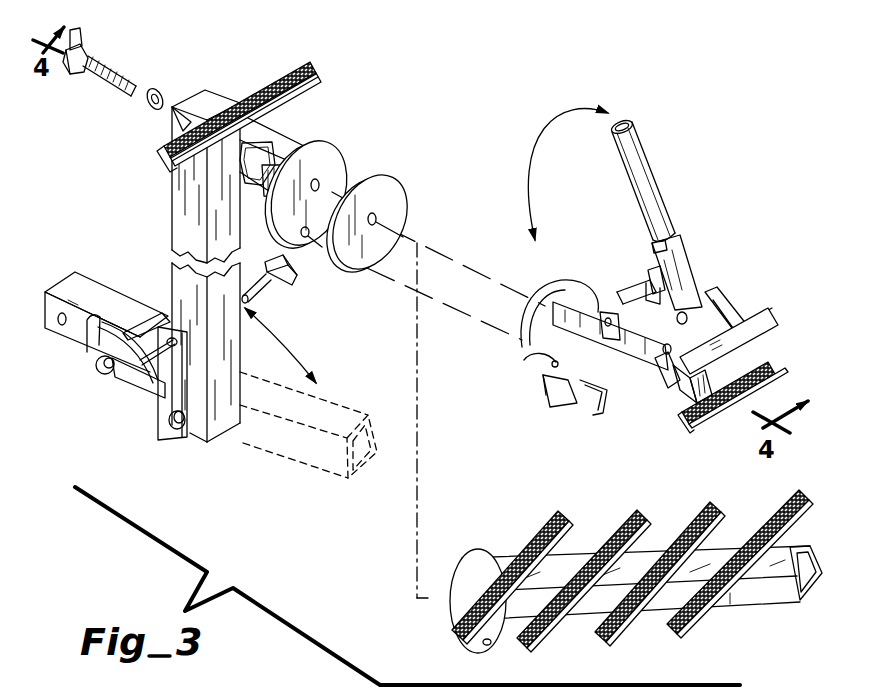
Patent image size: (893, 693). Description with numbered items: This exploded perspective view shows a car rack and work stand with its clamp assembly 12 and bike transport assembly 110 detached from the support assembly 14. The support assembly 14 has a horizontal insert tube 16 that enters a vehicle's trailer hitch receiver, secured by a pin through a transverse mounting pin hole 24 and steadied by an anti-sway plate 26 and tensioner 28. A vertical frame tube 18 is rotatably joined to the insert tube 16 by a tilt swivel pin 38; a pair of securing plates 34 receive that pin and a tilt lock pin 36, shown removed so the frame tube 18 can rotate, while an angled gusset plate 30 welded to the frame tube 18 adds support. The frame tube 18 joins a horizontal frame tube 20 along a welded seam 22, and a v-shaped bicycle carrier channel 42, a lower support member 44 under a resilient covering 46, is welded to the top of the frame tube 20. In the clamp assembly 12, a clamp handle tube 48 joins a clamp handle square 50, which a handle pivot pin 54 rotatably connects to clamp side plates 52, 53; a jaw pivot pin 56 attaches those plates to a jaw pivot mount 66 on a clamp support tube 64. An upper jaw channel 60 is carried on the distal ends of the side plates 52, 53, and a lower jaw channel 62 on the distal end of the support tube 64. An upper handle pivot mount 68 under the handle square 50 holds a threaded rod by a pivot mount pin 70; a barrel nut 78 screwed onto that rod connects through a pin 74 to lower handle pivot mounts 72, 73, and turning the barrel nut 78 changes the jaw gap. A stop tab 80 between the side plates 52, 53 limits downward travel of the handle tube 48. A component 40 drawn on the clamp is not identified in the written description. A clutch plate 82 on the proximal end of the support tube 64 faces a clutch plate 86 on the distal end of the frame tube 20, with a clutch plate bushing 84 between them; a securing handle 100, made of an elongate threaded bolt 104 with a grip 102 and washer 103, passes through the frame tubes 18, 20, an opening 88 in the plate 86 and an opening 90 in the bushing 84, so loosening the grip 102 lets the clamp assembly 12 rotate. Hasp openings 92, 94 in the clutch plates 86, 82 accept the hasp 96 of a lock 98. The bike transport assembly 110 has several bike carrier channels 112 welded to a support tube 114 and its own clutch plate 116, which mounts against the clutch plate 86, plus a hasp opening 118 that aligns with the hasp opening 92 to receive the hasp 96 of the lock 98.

The clamp assembly 12 is at (753, 212).
The support assembly 14 is at (152, 208).
The insert tube 16 is at (64, 290).
The vertical frame tube 18 is at (178, 236).
The horizontal frame tube 20 is at (292, 142).
The seam 22 is at (172, 124).
The mounting pin hole 24 is at (64, 326).
The anti-sway plate 26 is at (88, 316).
The tensioner 28 is at (106, 376).
The angled gusset plate 30 is at (152, 311).
The securing plates 34 is at (160, 405).
The tilt lock pin 36 is at (270, 285).
The tilt swivel pin 38 is at (177, 430).
The pivot bracket 40 is at (669, 243).
The bicycle carrier channel 42 is at (318, 56).
The lower support member 44 is at (163, 162).
The resilient covering 46 is at (316, 72).
The clamp handle tube 48 is at (690, 113).
The clamp handle square 50 is at (687, 262).
The clamp side plate 52 is at (722, 318).
The clamp side plate 53 is at (770, 312).
The handle pivot pin 54 is at (710, 300).
The jaw pivot pin 56 is at (660, 388).
The upper jaw channel 60 is at (815, 307).
The lower jaw channel 62 is at (815, 350).
The clamp support tube 64 is at (700, 408).
The jaw pivot mount 66 is at (678, 398).
The upper handle pivot mount 68 is at (650, 285).
The pivot mount pin 70 is at (648, 278).
The lower handle pivot mount 72 is at (545, 306).
The lower handle pivot mount 73 is at (677, 318).
The pin 74 is at (550, 313).
The barrel nut 78 is at (620, 296).
The stop tab 80 is at (662, 350).
The clutch plate 82 is at (560, 290).
The clutch plate bushing 84 is at (395, 187).
The clutch plate 86 is at (340, 150).
The opening 88 is at (320, 182).
The opening 90 is at (378, 216).
The hasp opening 92 is at (308, 240).
The hasp opening 94 is at (526, 360).
The hasp 96 is at (592, 415).
The lock 98 is at (530, 392).
The securing handle 100 is at (146, 62).
The grip 102 is at (80, 40).
The washer 103 is at (166, 92).
The threaded bolt 104 is at (120, 92).
The bike transport assembly 110 is at (548, 503).
The bike carrier channels 112 is at (626, 512).
The support tube 114 is at (775, 605).
The clutch plate 116 is at (505, 528).
The hasp opening 118 is at (492, 644).